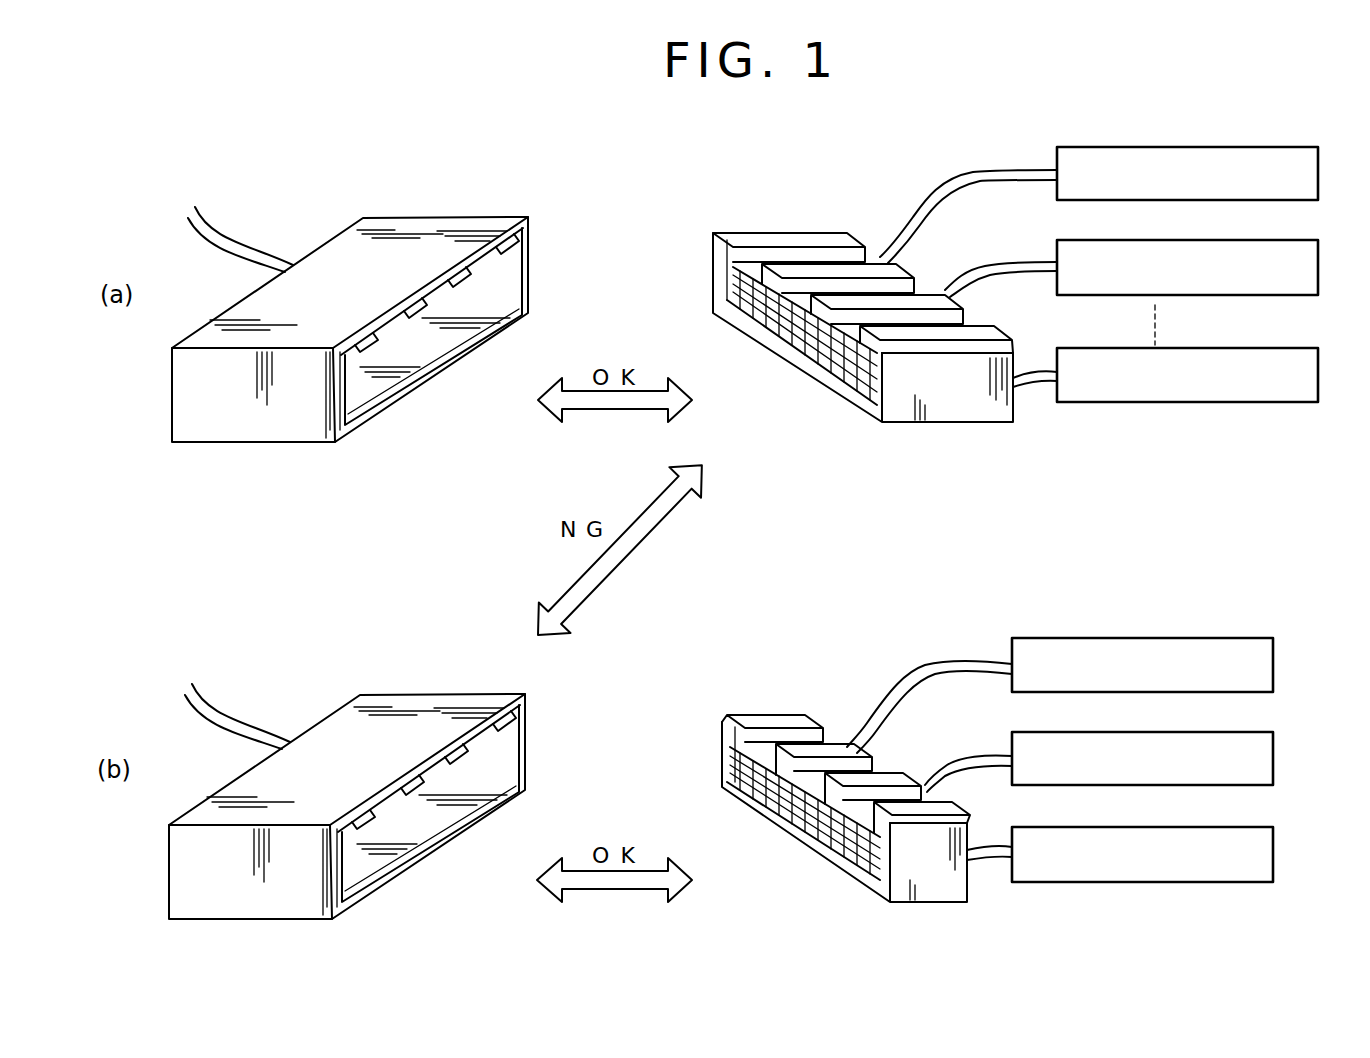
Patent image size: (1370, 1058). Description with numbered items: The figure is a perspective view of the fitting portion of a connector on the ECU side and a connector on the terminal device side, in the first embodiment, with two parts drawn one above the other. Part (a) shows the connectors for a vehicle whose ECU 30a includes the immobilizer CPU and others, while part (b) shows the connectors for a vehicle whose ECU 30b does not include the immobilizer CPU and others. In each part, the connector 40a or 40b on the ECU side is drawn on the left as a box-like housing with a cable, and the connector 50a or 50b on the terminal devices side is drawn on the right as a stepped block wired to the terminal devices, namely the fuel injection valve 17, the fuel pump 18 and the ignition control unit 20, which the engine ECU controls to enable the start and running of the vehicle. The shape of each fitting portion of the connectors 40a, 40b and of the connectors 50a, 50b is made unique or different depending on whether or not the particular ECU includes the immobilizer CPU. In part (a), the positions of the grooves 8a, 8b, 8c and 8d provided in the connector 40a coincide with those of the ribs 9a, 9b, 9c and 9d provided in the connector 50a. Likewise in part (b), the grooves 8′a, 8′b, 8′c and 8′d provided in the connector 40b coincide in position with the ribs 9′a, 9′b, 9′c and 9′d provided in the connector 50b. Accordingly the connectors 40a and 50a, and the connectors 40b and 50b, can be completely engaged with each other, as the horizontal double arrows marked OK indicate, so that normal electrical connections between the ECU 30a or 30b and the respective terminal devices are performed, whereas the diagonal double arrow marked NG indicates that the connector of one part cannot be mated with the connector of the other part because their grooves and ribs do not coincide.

The ECU 30a is at (348, 97).
The ECU 30b is at (375, 593).
The connector 40a is at (427, 202).
The connector 40b is at (423, 680).
The groove 8a is at (503, 233).
The groove 8b is at (453, 276).
The groove 8c is at (410, 301).
The groove 8d is at (352, 329).
The groove 8′a is at (485, 717).
The groove 8′b is at (447, 753).
The groove 8′c is at (393, 782).
The groove 8′d is at (350, 805).
The connector 50a is at (829, 223).
The connector 50b is at (782, 699).
The rib 9a is at (757, 237).
The rib 9b is at (808, 268).
The rib 9c is at (925, 300).
The rib 9d is at (1040, 340).
The rib 9′a is at (745, 718).
The rib 9′b is at (830, 753).
The rib 9′c is at (890, 782).
The rib 9′d is at (947, 818).
The fuel injection valve 17 is at (1283, 147).
The fuel pump 18 is at (1280, 240).
The ignition control unit 20 is at (1270, 348).